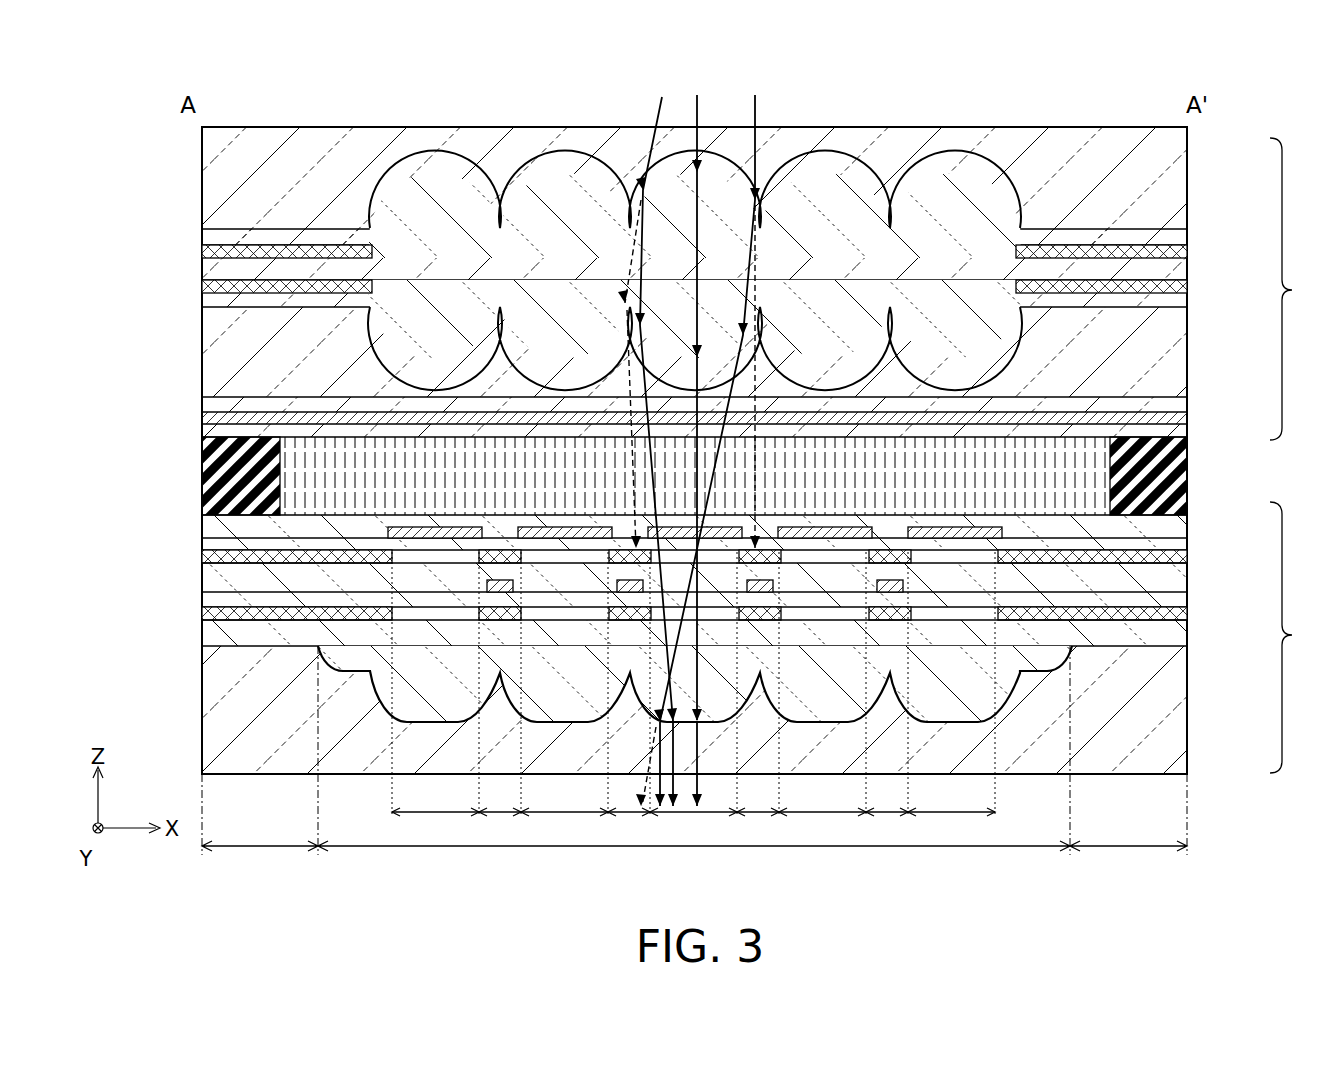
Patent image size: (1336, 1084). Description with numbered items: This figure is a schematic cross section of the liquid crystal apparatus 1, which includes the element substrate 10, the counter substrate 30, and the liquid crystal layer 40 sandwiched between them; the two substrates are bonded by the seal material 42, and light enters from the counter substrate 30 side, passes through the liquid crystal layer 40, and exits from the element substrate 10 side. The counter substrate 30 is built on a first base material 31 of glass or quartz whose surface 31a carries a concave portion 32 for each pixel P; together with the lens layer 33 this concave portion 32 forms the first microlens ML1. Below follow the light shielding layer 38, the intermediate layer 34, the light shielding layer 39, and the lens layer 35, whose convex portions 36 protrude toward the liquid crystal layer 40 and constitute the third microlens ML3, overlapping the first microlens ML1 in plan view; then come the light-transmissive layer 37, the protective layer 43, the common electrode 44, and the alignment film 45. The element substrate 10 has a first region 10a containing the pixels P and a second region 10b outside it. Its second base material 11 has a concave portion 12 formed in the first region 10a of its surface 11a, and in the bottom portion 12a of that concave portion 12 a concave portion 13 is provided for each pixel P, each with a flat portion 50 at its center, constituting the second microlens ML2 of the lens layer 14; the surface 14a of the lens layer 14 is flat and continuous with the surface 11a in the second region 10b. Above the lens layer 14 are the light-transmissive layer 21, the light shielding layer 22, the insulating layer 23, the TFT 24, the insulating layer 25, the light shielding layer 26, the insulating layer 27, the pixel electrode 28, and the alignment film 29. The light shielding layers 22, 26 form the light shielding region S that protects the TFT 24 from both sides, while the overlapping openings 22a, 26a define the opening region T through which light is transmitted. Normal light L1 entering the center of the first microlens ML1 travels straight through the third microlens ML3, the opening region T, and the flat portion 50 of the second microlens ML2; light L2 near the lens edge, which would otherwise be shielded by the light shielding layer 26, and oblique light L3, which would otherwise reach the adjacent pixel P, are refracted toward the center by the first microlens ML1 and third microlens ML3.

The liquid crystal apparatus 1 is at (1288, 102).
The element substrate 10 is at (1296, 637).
The first region 10a is at (694, 835).
The second region 10b is at (694, 835).
The second base material 11 is at (1170, 728).
The surface 11a is at (215, 645).
The concave portion 12 is at (1062, 660).
The bottom portion 12a is at (365, 672).
The concave portion 13 is at (1005, 700).
The lens layer 14 is at (1072, 652).
The surface 14a is at (337, 645).
The light-transmissive layer 21 is at (1180, 630).
The light shielding layer 22 is at (1183, 614).
The opening 22a is at (912, 616).
The insulating layer 23 is at (1183, 600).
The TFT 24 is at (876, 590).
The insulating layer 25 is at (1180, 578).
The light shielding layer 26 is at (1183, 557).
The opening 26a is at (912, 558).
The insulating layer 27 is at (1183, 545).
The pixel electrode 28 is at (945, 527).
The alignment film 29 is at (1180, 530).
The counter substrate 30 is at (1296, 289).
The first base material 31 is at (1178, 170).
The surface 31a is at (212, 238).
The concave portion 32 is at (950, 184).
The lens layer 33 is at (1183, 232).
The intermediate layer 34 is at (1180, 268).
The lens layer 35 is at (1183, 300).
The convex portion 36 is at (968, 358).
The light-transmissive layer 37 is at (1180, 357).
The light shielding layer 38 is at (1183, 252).
The light shielding layer 39 is at (1183, 286).
The liquid crystal layer 40 is at (1165, 492).
The seal material 42 is at (1175, 462).
The protective layer 43 is at (1183, 404).
The common electrode 44 is at (1183, 418).
The alignment film 45 is at (1183, 430).
The flat portion 50 is at (423, 723).
The first microlens ML1 is at (914, 170).
The second microlens ML2 is at (934, 735).
The third microlens ML3 is at (916, 364).
The light L1 is at (688, 117).
The light L2 is at (767, 118).
The light L3 is at (655, 118).
The pixel P is at (952, 121).
The opening region T is at (693, 801).
The light shielding region S is at (694, 799).